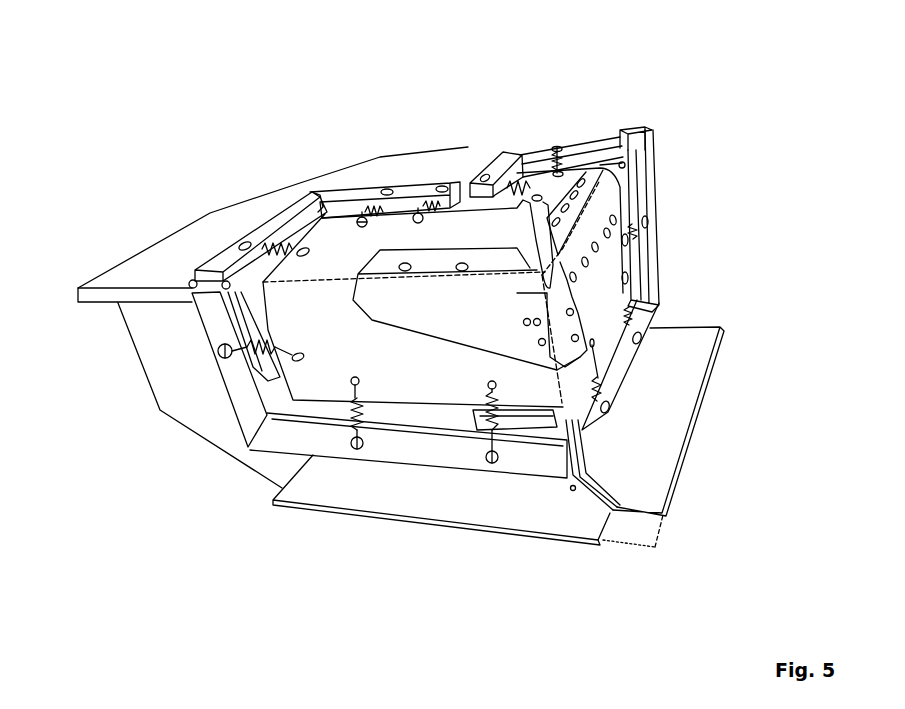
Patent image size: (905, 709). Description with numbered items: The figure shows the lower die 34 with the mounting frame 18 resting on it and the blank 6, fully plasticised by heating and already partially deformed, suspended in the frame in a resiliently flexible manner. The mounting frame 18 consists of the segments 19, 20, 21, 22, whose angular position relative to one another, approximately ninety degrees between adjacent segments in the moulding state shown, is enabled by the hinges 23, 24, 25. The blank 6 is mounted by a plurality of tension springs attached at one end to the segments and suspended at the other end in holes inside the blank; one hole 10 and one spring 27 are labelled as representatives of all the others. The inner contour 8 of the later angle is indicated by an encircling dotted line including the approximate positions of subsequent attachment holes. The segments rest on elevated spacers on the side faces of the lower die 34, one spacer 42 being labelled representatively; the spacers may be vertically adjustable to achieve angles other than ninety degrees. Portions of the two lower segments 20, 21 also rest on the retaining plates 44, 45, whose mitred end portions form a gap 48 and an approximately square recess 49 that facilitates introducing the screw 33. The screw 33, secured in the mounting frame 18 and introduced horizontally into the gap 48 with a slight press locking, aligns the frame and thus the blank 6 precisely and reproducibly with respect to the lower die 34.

The lower die 34 is at (380, 167).
The mounting frame 18 is at (668, 257).
The segment 19 is at (266, 224).
The hole 10 is at (302, 250).
The inner contour 8 is at (342, 247).
The segment 22 is at (497, 165).
The spacer 42 is at (528, 172).
The hinge 24 is at (640, 150).
The spring 27 is at (264, 225).
The hinge 23 is at (191, 281).
The segment 21 is at (648, 308).
The retaining plate 45 is at (672, 418).
The segment 20 is at (243, 414).
The retaining plate 44 is at (330, 495).
The blank 6 is at (432, 384).
The hinge 25 is at (553, 431).
The screw 33 is at (575, 490).
The recess 49 is at (627, 535).
The gap 48 is at (612, 513).